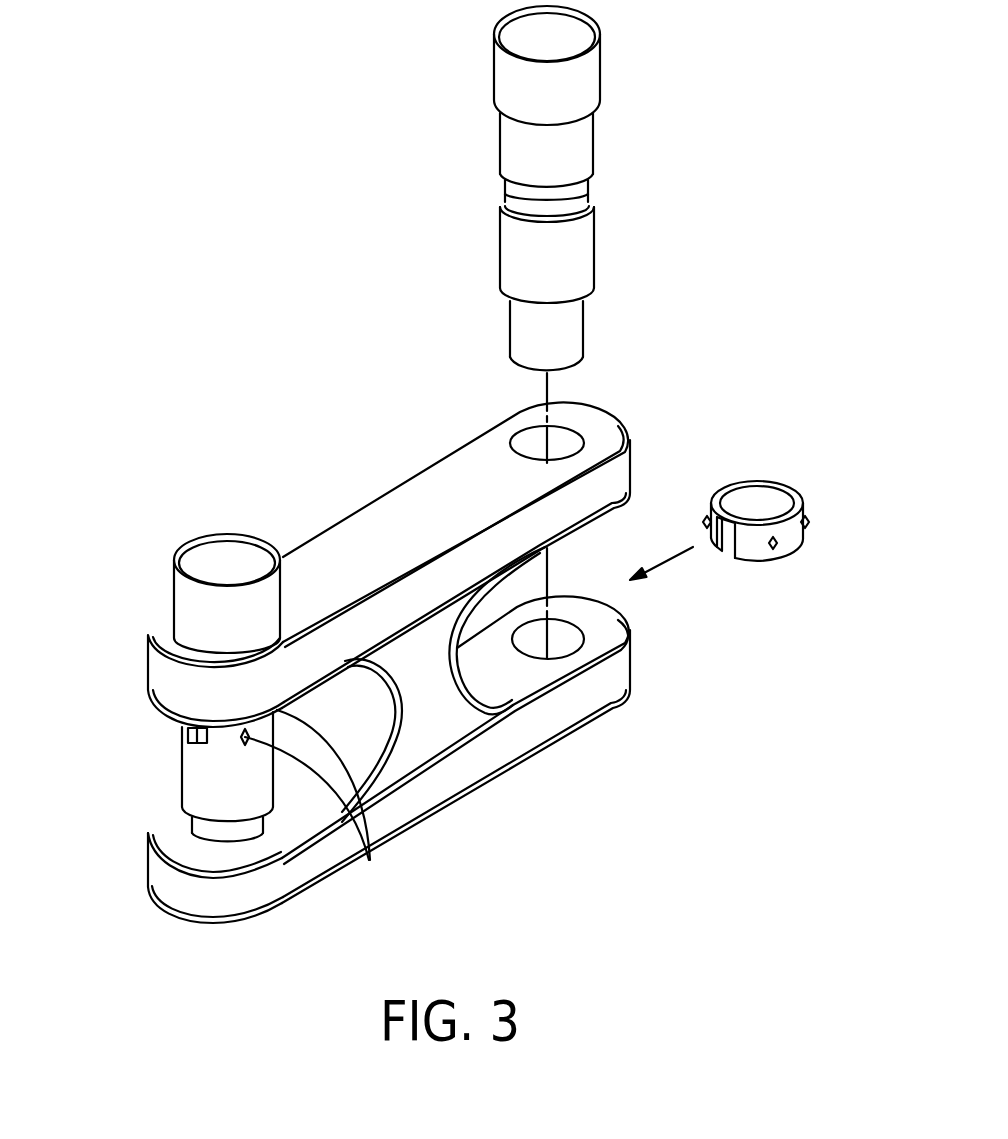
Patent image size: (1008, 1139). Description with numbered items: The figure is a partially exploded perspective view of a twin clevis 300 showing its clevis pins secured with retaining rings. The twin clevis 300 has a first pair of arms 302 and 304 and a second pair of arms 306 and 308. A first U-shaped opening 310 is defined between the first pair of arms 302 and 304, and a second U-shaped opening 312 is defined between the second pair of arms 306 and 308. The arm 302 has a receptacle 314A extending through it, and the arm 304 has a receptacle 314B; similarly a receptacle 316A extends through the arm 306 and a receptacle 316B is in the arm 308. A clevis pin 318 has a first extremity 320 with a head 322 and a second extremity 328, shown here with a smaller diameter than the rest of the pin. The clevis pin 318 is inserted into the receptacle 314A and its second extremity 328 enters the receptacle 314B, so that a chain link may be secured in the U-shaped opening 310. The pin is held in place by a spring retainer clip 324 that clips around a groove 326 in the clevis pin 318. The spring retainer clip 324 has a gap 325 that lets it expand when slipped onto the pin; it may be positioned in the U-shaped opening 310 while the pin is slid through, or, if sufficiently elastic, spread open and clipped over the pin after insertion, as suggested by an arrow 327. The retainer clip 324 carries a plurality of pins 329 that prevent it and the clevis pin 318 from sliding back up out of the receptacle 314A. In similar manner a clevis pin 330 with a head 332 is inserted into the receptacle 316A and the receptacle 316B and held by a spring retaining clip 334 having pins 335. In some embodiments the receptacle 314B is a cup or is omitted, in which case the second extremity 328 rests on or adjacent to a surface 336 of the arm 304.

The twin clevis 300 is at (410, 482).
The arm 302 is at (632, 456).
The arm 304 is at (632, 664).
The arm 306 is at (150, 660).
The arm 308 is at (150, 872).
The first U-shaped opening 310 is at (662, 504).
The second U-shaped opening 312 is at (140, 770).
The receptacle 314A is at (525, 430).
The receptacle 314B is at (524, 660).
The receptacle 316A is at (176, 612).
The receptacle 316B is at (243, 806).
The clevis pin 318 is at (596, 147).
The first extremity 320 is at (455, 97).
The head 322 is at (604, 70).
The spring retainer clip 324 is at (780, 483).
The gap 325 is at (727, 556).
The groove 326 is at (505, 188).
The arrow 327 is at (672, 558).
The second extremity 328 is at (603, 319).
The pins 329 is at (778, 546).
The clevis pin 330 is at (180, 788).
The head 332 is at (228, 535).
The spring retaining clip 334 is at (186, 730).
The pins 335 is at (318, 805).
The surface 336 is at (589, 608).